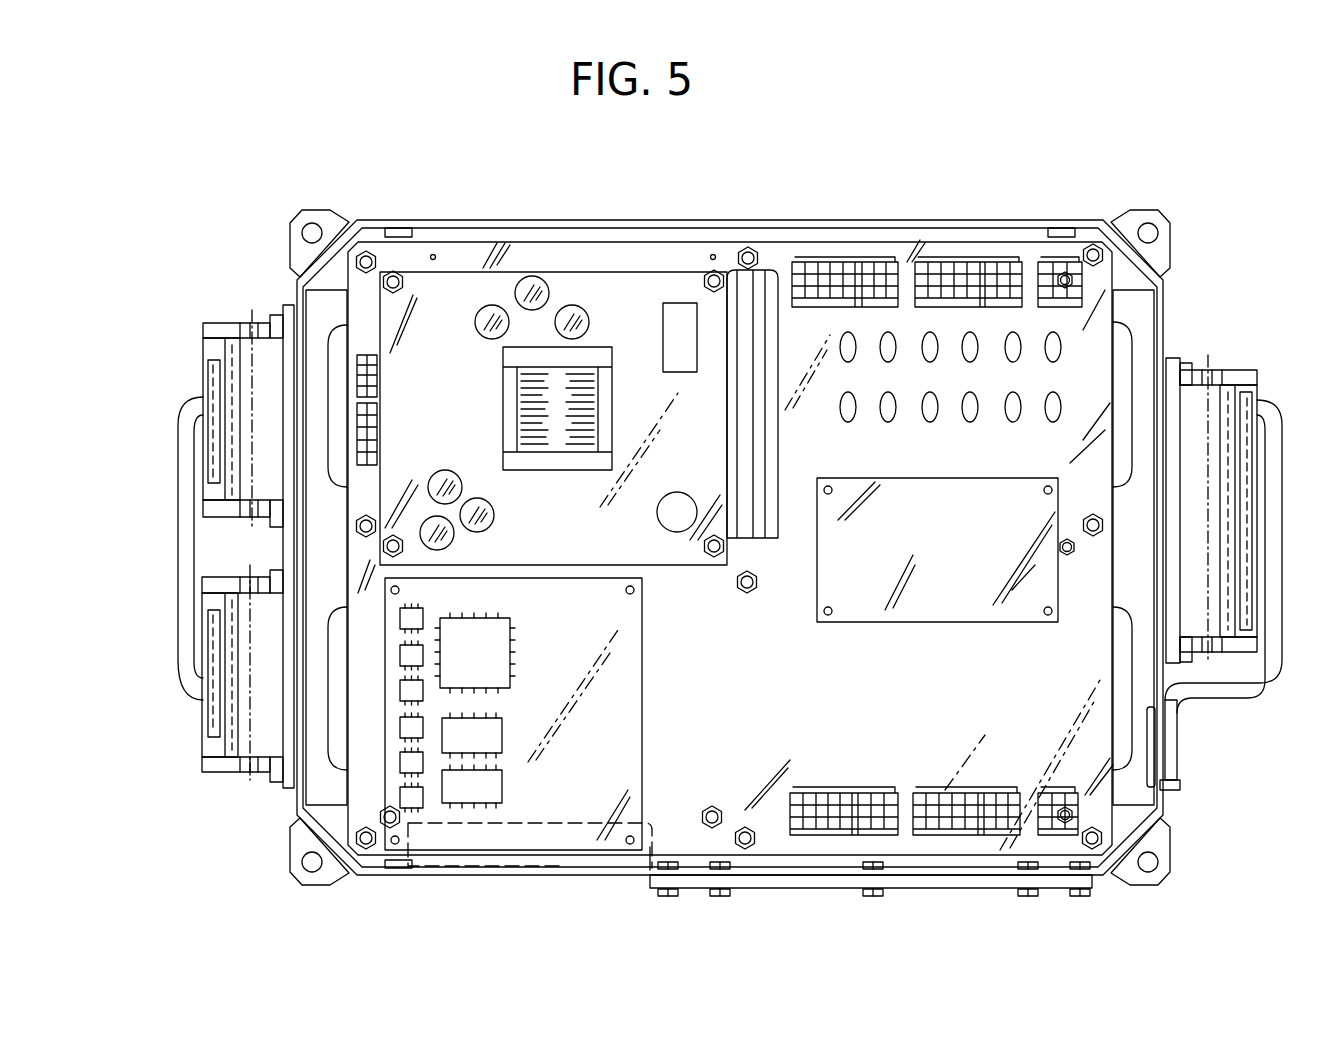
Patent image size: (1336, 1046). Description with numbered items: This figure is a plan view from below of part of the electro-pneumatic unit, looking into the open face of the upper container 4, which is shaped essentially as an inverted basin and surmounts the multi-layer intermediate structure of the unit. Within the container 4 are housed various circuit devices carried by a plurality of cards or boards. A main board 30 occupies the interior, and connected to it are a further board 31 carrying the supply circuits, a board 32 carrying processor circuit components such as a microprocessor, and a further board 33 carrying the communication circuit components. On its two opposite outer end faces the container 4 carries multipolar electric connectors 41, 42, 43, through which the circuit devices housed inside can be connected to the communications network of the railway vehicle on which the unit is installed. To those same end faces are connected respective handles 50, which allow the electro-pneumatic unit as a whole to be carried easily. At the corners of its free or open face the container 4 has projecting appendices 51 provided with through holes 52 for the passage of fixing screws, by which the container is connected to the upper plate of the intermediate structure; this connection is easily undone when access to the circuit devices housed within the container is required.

The upper container 4 is at (976, 216).
The main board 30 is at (1093, 327).
The board carrying supply circuits 31 is at (458, 290).
The board carrying processor circuit components 32 is at (517, 840).
The board carrying communication circuit components 33 is at (867, 607).
The multipolar electric connector 41 is at (1233, 372).
The multipolar electric connector 42 is at (198, 720).
The multipolar electric connector 43 is at (198, 360).
The handle 50 is at (178, 458).
The projecting appendix 51 is at (322, 208).
The through hole 52 is at (313, 238).